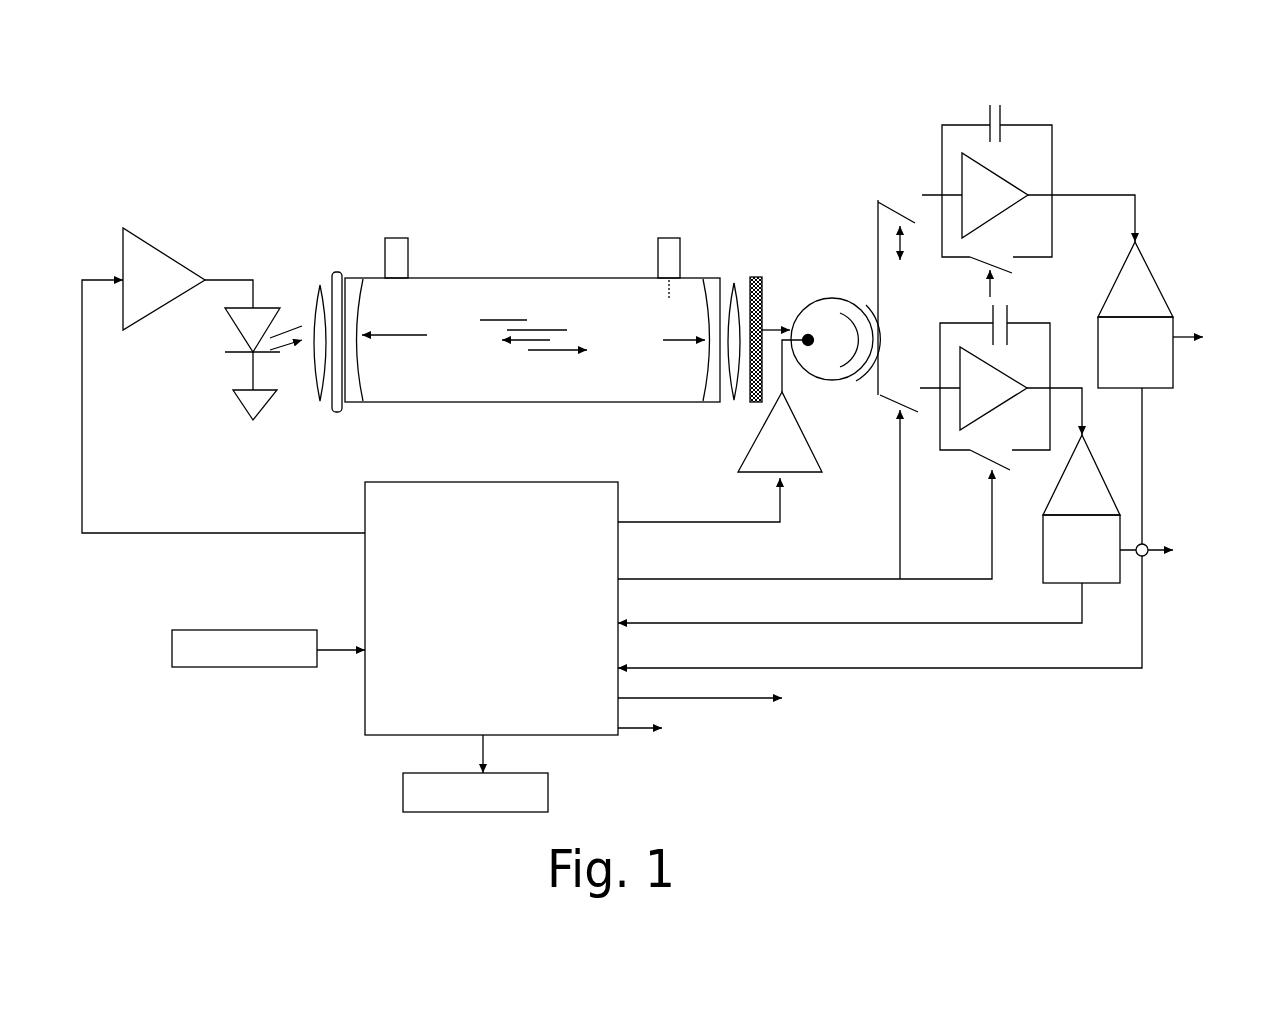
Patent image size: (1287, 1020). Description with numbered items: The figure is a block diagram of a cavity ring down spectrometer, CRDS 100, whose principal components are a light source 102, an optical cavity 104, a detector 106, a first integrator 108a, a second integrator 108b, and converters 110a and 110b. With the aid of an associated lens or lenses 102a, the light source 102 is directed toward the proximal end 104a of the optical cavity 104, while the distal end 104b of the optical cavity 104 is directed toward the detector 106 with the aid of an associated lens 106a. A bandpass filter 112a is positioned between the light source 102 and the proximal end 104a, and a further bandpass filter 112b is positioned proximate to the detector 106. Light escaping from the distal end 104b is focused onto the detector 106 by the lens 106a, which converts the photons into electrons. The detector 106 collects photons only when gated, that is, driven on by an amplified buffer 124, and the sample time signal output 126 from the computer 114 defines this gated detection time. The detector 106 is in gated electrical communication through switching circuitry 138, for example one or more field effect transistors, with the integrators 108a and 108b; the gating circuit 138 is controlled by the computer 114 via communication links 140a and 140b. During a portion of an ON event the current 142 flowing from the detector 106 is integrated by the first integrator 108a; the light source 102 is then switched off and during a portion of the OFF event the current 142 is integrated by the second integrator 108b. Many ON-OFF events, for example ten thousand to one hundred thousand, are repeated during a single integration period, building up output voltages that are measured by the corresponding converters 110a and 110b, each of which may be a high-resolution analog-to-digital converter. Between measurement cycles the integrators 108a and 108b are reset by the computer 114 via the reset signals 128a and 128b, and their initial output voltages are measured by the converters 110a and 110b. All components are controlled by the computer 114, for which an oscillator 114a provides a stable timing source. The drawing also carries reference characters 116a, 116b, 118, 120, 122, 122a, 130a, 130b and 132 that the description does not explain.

The cavity ring down spectrometer (CRDS) 100 is at (878, 113).
The light source 102 is at (231, 318).
The lens 102a is at (315, 287).
The optical cavity 104 is at (627, 278).
The proximal end of optical cavity 104a is at (394, 348).
The distal end of optical cavity 104b is at (676, 328).
The detector 106 is at (827, 345).
The lens 106a is at (736, 283).
The first integrator 108a is at (1027, 323).
The second integrator 108b is at (1005, 110).
The converter 110a is at (1108, 509).
The converter 110b is at (1148, 270).
The bandpass filter 112a is at (335, 273).
The bandpass filter 112b is at (757, 277).
The computer 114 is at (491, 608).
The oscillator 114a is at (268, 648).
The first mirror 116a is at (357, 402).
The second mirror 116b is at (702, 402).
The gas inlet port 118 is at (400, 238).
The gas outlet port 120 is at (667, 238).
The LED driver amplifier 122 is at (157, 249).
The LED drive signal line 122a is at (83, 462).
The amplified buffer 124 is at (780, 432).
The sample time signal output 126 is at (643, 522).
The reset signal 128a is at (718, 579).
The reset signal 128b is at (642, 728).
The first ADC data line 130a is at (745, 623).
The second ADC data line 130b is at (905, 668).
The output / display 132 is at (475, 773).
The switching circuitry 138 is at (878, 200).
The communication link 140a is at (898, 475).
The communication link 140b is at (762, 700).
The current 142 is at (856, 381).